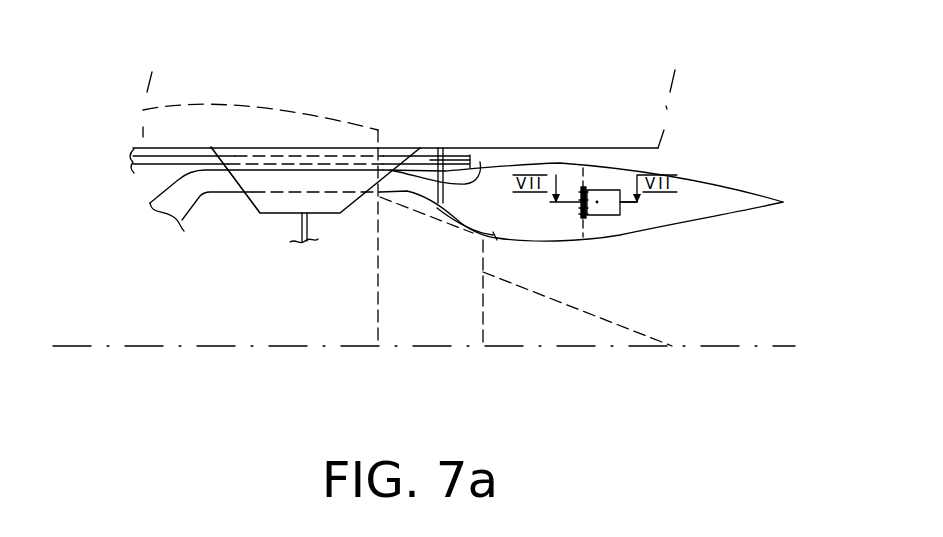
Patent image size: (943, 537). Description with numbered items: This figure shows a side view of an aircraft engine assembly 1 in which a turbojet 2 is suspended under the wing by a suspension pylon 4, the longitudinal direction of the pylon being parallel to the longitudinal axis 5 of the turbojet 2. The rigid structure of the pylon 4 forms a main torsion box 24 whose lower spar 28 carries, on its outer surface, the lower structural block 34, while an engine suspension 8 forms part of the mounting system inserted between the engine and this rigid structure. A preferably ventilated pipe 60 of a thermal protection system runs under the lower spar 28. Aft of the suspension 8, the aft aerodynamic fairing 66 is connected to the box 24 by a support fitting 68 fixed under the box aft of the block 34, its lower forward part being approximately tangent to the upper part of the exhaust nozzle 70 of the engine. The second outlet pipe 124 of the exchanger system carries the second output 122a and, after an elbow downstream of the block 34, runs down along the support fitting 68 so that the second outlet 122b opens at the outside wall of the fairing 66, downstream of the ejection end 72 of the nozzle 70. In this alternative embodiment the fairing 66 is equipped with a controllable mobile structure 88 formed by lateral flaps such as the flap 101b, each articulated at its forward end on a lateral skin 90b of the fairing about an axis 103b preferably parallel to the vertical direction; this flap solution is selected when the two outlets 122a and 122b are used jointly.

The aircraft engine assembly 1 is at (542, 72).
The turbojet 2 is at (411, 326).
The suspension pylon 4 is at (388, 132).
The longitudinal axis 5 is at (218, 348).
The engine suspension 8 is at (311, 226).
The box 24 is at (588, 146).
The lower spar 28 is at (543, 147).
The lower structural block 34 is at (265, 216).
The ventilated pipe 60 is at (458, 160).
The aft aerodynamic fairing 66 is at (702, 178).
The support fitting 68 is at (440, 147).
The exhaust nozzle 70 is at (463, 327).
The ejection end 72 is at (485, 320).
The mobile structure 88 is at (622, 218).
The lateral skin 90b is at (603, 225).
The lateral flap 101b is at (621, 205).
The articulation axis 103b is at (583, 235).
The second output 122a is at (433, 190).
The second outlet 122b is at (498, 238).
The second outlet pipe 124 is at (212, 193).